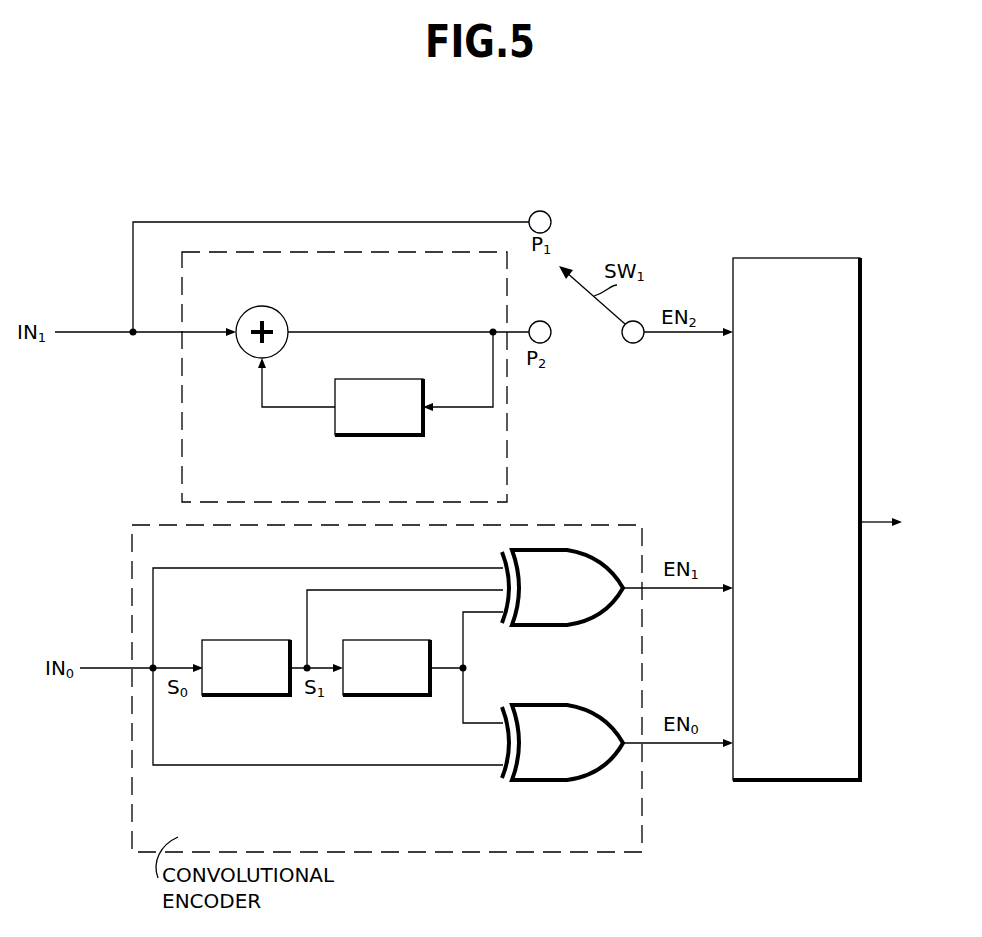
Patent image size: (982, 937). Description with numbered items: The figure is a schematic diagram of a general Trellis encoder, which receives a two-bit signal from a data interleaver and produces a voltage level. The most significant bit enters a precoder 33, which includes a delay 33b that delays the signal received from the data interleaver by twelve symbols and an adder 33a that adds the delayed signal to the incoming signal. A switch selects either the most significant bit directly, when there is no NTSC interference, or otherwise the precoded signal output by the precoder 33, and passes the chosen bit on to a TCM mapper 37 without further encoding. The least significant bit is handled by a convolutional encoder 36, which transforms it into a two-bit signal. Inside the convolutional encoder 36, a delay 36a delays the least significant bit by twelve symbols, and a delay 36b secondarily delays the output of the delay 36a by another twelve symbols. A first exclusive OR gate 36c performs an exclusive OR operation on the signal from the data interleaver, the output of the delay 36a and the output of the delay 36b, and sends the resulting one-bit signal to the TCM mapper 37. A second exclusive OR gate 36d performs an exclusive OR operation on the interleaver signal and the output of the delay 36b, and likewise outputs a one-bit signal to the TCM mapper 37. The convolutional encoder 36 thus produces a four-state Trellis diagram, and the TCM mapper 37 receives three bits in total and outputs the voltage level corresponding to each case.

The precoder 33 is at (338, 257).
The adder 33a is at (262, 318).
The delay 33b is at (375, 438).
The convolutional encoder 36 is at (158, 810).
The delay 36a is at (246, 697).
The delay 36b is at (385, 697).
The first exclusive OR gate 36c is at (550, 610).
The second exclusive OR gate 36d is at (555, 765).
The TCM mapper 37 is at (840, 275).